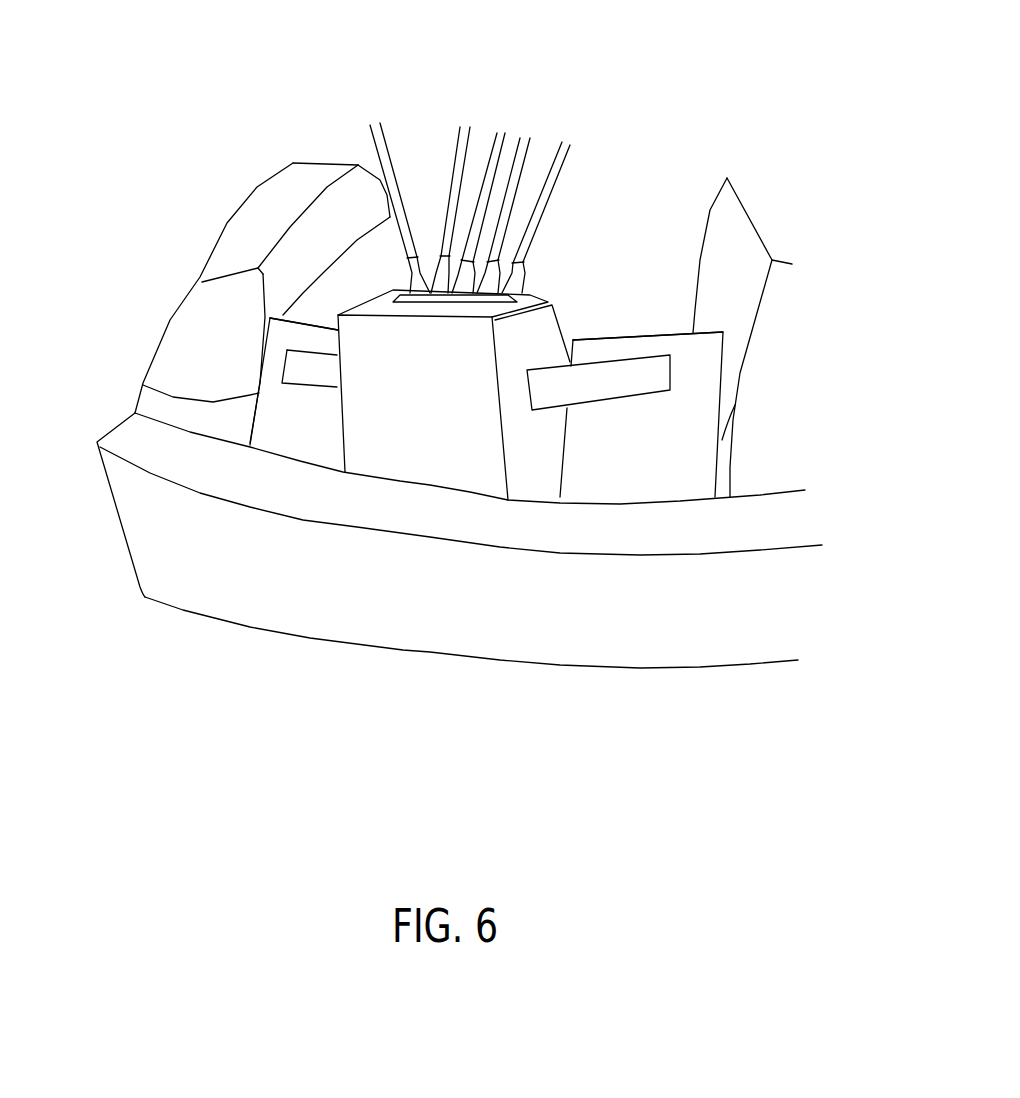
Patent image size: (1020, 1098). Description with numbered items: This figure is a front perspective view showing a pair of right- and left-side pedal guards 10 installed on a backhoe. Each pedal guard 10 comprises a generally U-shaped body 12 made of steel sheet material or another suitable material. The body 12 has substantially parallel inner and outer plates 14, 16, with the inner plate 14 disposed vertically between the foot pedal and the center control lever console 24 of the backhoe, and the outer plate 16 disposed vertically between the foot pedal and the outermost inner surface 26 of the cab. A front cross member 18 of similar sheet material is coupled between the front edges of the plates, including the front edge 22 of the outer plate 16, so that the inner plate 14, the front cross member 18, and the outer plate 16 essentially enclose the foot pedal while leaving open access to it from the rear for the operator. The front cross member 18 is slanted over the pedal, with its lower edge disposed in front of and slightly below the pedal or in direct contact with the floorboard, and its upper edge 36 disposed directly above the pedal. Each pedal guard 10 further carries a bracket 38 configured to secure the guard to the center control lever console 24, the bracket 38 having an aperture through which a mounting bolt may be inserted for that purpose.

The pedal guard 10 is at (303, 317).
The body 12 is at (278, 348).
The inner plate 14 is at (553, 445).
The outer plate 16 is at (244, 417).
The front cross member 18 is at (312, 445).
The front edge of the outer plate 22 is at (715, 457).
The center control lever console 24 is at (423, 443).
The outermost inner surface of the cab 26 is at (330, 237).
The upper edge of the front cross member 36 is at (320, 313).
The bracket 38 is at (310, 372).